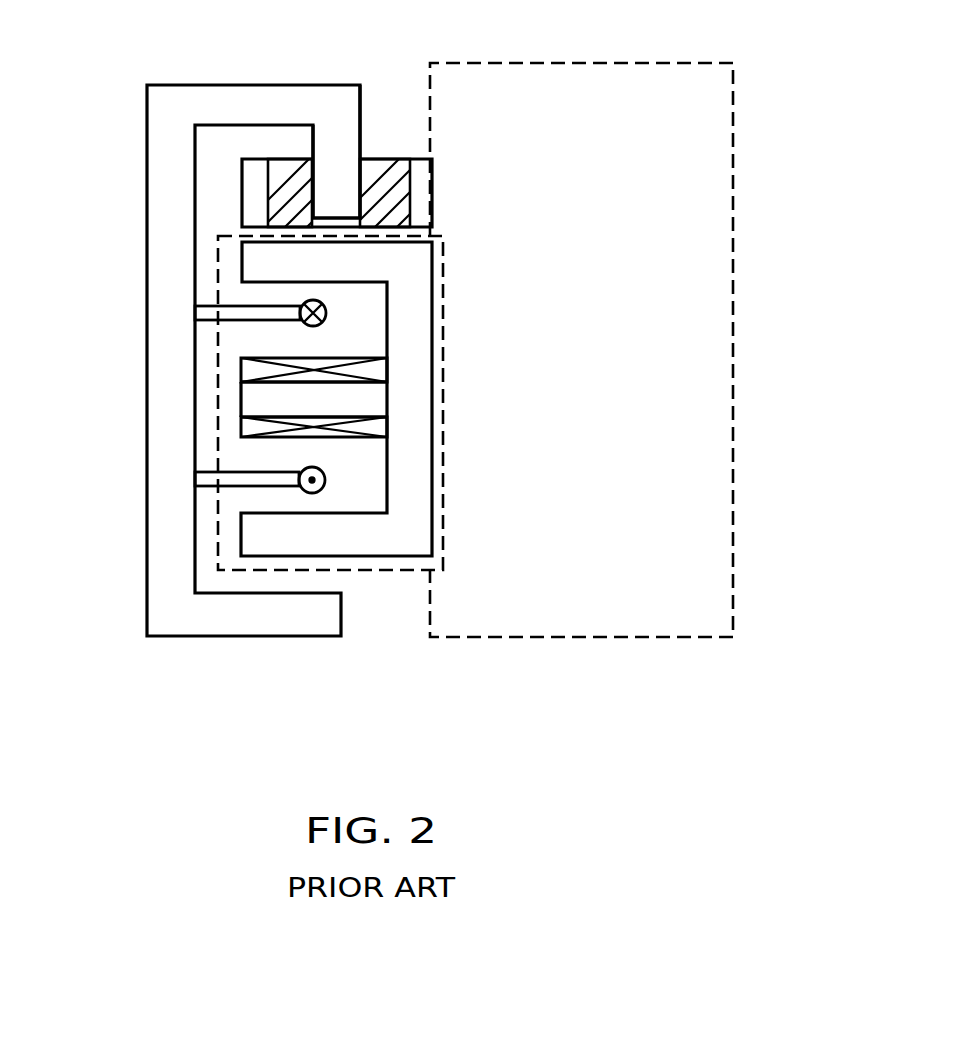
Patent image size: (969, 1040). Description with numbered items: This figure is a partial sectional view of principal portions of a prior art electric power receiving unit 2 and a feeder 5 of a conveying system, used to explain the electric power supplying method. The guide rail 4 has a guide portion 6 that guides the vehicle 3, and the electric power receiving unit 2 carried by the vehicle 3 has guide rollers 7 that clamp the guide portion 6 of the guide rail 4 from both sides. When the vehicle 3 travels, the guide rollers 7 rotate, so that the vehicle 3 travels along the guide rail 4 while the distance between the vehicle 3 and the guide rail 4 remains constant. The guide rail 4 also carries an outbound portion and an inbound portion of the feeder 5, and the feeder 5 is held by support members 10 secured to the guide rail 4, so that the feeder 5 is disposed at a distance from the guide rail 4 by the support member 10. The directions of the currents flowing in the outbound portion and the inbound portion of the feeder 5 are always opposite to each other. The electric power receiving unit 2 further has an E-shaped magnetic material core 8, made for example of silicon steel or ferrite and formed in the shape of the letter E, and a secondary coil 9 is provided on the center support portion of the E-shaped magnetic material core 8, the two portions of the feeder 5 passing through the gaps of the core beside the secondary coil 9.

The electric power receiving unit 2 is at (372, 570).
The vehicle 3 is at (733, 343).
The guide rail 4 is at (248, 85).
The feeder 5 is at (327, 313).
The guide portion 6 is at (348, 132).
The guide roller 7 is at (400, 181).
The E-shaped magnetic material core 8 is at (420, 455).
The secondary coil 9 is at (382, 372).
The support member 10 is at (192, 481).